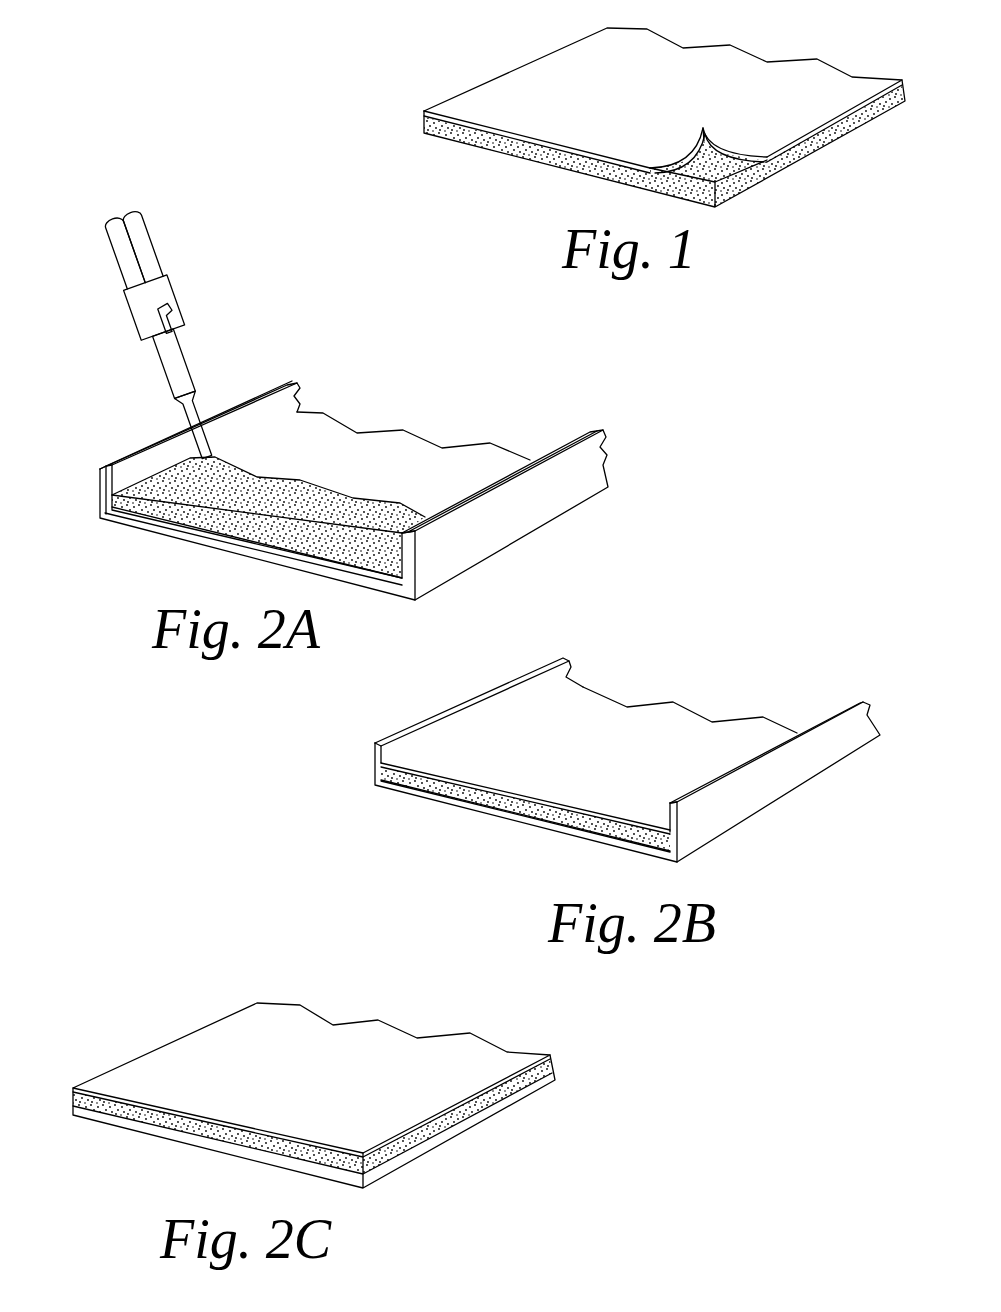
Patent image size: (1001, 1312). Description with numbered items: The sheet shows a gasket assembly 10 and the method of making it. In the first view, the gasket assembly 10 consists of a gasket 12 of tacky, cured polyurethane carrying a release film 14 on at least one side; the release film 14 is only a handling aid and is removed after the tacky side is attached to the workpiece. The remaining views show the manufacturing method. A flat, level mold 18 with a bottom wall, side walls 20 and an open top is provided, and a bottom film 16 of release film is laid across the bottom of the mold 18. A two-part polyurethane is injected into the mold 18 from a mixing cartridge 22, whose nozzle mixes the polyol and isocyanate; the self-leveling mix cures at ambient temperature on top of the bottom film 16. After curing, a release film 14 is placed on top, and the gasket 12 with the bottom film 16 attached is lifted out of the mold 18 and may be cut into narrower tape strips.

In FIG. 1, the gasket assembly 10 is at (392, 74).
In FIG. 2A, the gasket assembly 10 is at (498, 412).
In FIG. 2B, the gasket assembly 10 is at (698, 677).
In FIG. 2C, the gasket assembly 10 is at (235, 981).
In FIG. 1, the gasket 12 is at (535, 160).
In FIG. 2A, the gasket 12 is at (287, 480).
In FIG. 2B, the gasket 12 is at (375, 782).
In FIG. 2C, the gasket 12 is at (73, 1100).
In FIG. 1, the release film 14 is at (653, 108).
In FIG. 2A, the release film 14 is at (367, 450).
In FIG. 2B, the release film 14 is at (575, 760).
In FIG. 2C, the release film 14 is at (303, 1083).
In FIG. 2B, the bottom film 16 is at (543, 830).
In FIG. 2C, the bottom film 16 is at (227, 1155).
In FIG. 2A, the mold 18 is at (337, 490).
In FIG. 2B, the mold 18 is at (627, 760).
In FIG. 2A, the tray wall 20 is at (93, 488).
In FIG. 2A, the mixing cartridge 22 is at (180, 331).